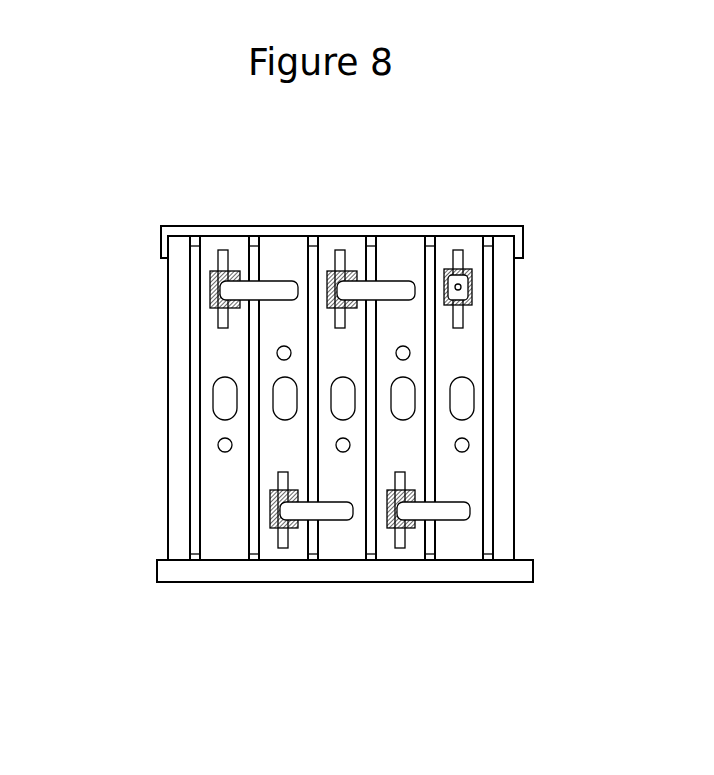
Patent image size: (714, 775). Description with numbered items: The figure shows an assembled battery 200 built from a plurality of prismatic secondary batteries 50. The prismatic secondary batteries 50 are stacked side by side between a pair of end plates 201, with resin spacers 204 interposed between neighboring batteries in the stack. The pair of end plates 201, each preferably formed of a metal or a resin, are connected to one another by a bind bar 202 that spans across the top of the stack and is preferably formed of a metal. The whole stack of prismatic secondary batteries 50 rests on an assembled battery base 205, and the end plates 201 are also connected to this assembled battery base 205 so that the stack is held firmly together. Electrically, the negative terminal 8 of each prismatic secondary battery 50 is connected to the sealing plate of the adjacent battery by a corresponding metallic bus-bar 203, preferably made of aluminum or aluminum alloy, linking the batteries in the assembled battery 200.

The assembled battery 200 is at (103, 151).
The negative terminal 8 is at (215, 272).
The bus-bar 203 is at (282, 290).
The bind bar 202 is at (342, 233).
The prismatic secondary battery 50 is at (400, 255).
The resin spacer 204 is at (433, 258).
The end plate 201 is at (183, 463).
The assembled battery base 205 is at (347, 578).